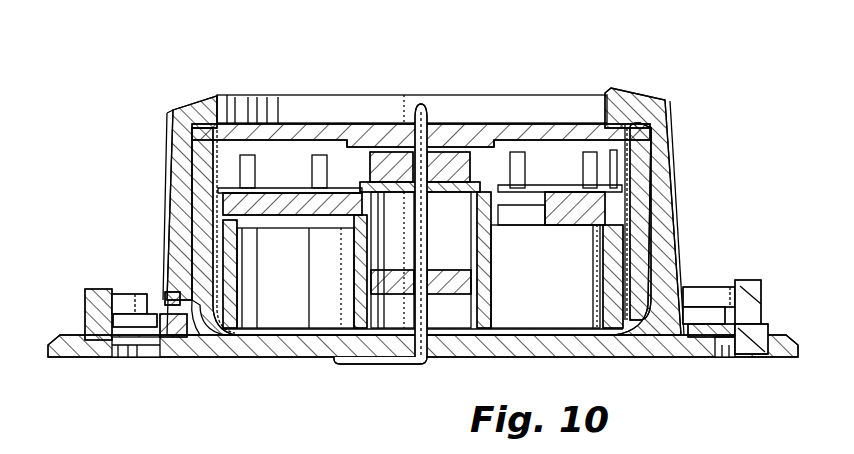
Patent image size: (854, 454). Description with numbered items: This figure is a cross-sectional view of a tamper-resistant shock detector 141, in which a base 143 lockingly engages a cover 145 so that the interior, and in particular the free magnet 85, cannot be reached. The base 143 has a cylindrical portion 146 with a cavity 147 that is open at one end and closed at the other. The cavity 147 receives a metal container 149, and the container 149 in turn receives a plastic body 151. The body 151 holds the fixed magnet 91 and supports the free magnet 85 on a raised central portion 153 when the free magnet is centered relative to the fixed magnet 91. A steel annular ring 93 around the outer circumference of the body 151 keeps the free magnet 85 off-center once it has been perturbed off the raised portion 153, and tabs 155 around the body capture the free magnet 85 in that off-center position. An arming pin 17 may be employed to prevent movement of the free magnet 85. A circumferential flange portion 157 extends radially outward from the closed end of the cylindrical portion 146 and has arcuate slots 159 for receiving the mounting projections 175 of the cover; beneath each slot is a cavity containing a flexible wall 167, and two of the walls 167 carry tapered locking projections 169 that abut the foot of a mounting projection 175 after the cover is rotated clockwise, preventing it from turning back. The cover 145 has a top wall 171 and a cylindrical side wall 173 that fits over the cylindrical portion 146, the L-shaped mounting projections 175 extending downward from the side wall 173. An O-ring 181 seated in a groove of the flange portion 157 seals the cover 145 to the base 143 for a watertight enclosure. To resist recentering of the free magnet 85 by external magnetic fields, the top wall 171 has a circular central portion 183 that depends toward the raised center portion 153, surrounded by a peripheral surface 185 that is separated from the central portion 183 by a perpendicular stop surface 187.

The tamper-resistant detector 141 is at (150, 58).
The base 143 is at (85, 300).
The cover 145 is at (226, 95).
The cylindrical portion 146 is at (190, 196).
The cavity 147 is at (210, 150).
The metal container 149 is at (290, 345).
The plastic body 151 is at (218, 335).
The raised central portion 153 is at (350, 180).
The tabs 155 is at (591, 167).
The flange portion 157 is at (762, 304).
The arcuate slots 159 is at (122, 292).
The wall 167 is at (128, 345).
The locking projections 169 is at (150, 330).
The top wall 171 is at (530, 130).
The cylindrical side wall 173 is at (675, 176).
The mounting projections 175 is at (110, 324).
The O-ring 181 is at (165, 290).
The circular central portion 183 is at (485, 155).
The peripheral surface 185 is at (576, 147).
The stop surface 187 is at (330, 147).
The arming pin 17 is at (417, 314).
The free magnet 85 is at (440, 160).
The fixed magnet 91 is at (447, 293).
The steel annular ring 93 is at (652, 200).